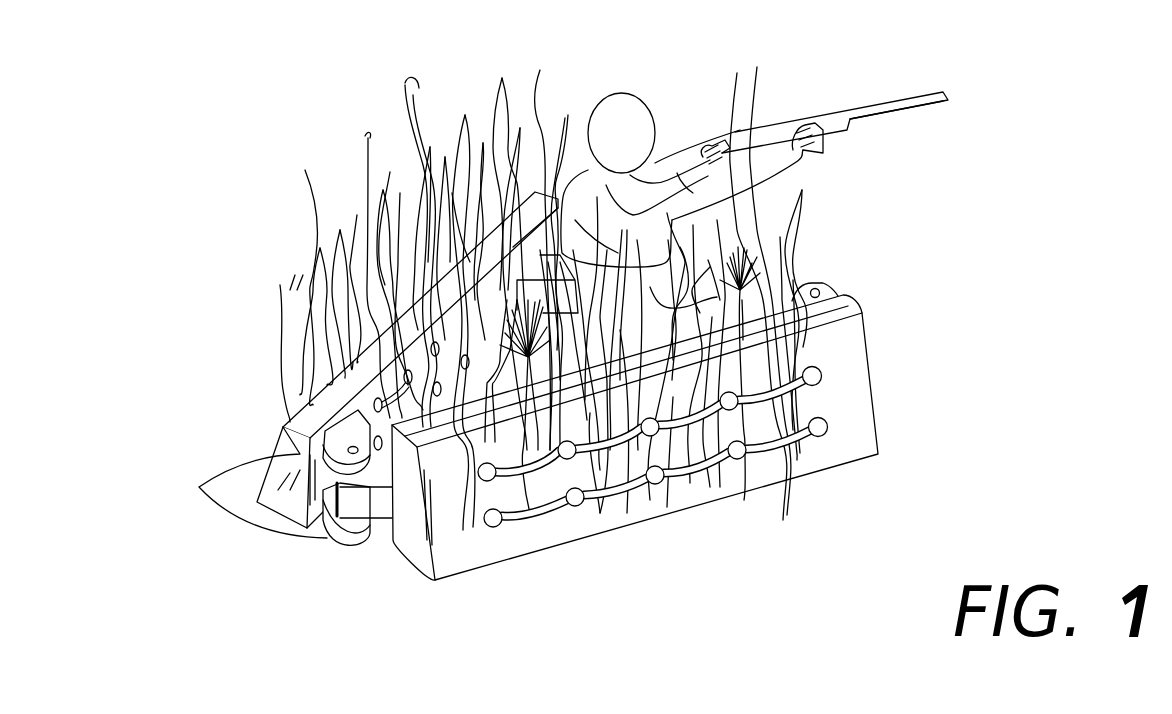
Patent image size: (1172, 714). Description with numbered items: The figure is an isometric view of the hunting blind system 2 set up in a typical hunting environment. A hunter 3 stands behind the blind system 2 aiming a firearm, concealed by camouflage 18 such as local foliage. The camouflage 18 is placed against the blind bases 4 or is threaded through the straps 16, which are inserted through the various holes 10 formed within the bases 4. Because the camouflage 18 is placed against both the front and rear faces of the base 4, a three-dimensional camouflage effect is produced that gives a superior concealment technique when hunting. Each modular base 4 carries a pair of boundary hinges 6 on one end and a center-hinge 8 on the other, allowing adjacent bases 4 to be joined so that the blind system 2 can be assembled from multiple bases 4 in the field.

The hunting blind system 2 is at (212, 165).
The hunter 3 is at (632, 93).
The blind base 4 is at (910, 349).
The boundary hinge 6 is at (199, 487).
The center-hinge 8 is at (376, 519).
The holes 10 is at (490, 527).
The straps 16 is at (557, 513).
The camouflage 18 is at (370, 110).